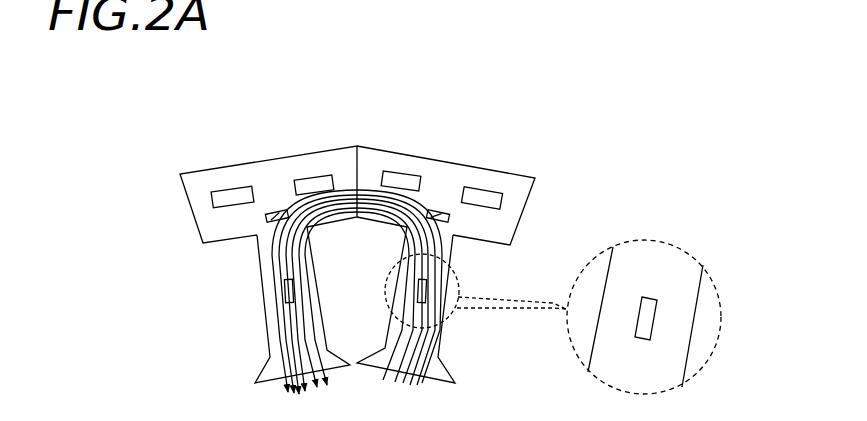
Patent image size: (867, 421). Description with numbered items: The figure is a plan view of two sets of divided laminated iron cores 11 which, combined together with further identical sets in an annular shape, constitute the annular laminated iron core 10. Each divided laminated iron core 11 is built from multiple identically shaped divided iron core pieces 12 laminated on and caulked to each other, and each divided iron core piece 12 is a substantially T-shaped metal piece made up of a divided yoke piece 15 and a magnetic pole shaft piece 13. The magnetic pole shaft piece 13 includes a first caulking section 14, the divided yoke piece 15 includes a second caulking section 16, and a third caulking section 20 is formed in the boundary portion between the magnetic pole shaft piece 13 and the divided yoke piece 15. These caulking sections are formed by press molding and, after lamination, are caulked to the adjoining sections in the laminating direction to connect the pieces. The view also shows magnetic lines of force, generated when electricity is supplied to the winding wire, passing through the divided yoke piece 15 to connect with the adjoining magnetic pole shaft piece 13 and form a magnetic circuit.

The annular laminated iron core 10 is at (604, 157).
The divided laminated iron core 11 is at (265, 156).
The divided iron core piece 12 is at (518, 183).
The magnetic pole shaft piece 13 is at (260, 306).
The first caulking section 14 is at (289, 302).
The divided yoke piece 15 is at (208, 182).
The second caulking section 16 is at (232, 198).
The third caulking section 20 is at (267, 218).